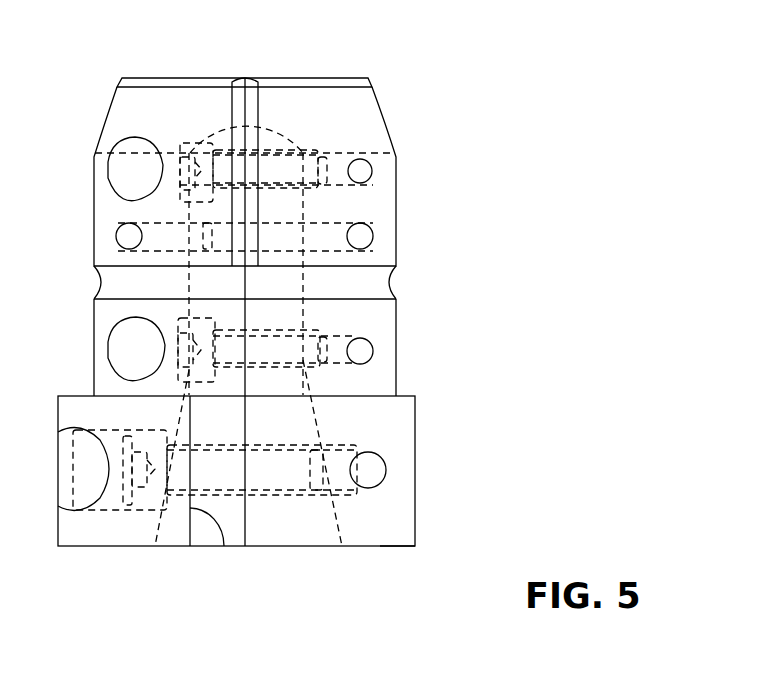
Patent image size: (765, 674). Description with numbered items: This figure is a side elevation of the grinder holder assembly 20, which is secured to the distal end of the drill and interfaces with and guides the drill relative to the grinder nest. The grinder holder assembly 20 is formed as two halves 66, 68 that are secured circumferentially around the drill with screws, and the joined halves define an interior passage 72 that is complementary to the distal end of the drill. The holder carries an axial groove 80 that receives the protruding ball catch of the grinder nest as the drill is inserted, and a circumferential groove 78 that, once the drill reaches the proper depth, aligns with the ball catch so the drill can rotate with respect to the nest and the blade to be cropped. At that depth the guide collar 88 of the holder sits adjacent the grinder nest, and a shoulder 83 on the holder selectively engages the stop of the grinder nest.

The grinder holder assembly 20 is at (440, 197).
The axial groove 80 is at (245, 110).
The circumferential groove 78 is at (386, 275).
The guide collar 88 is at (427, 478).
The first half of grinder holder assembly 66 is at (97, 533).
The second half of grinder holder assembly 68 is at (387, 530).
The interior passage 72 is at (155, 530).
The shoulder 83 is at (224, 546).